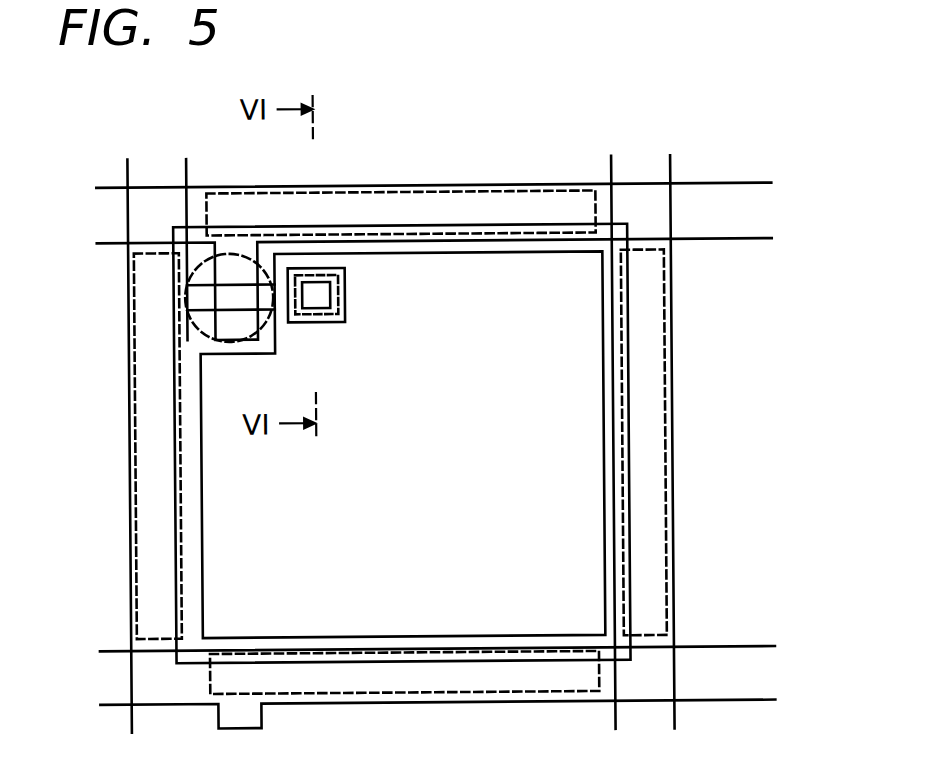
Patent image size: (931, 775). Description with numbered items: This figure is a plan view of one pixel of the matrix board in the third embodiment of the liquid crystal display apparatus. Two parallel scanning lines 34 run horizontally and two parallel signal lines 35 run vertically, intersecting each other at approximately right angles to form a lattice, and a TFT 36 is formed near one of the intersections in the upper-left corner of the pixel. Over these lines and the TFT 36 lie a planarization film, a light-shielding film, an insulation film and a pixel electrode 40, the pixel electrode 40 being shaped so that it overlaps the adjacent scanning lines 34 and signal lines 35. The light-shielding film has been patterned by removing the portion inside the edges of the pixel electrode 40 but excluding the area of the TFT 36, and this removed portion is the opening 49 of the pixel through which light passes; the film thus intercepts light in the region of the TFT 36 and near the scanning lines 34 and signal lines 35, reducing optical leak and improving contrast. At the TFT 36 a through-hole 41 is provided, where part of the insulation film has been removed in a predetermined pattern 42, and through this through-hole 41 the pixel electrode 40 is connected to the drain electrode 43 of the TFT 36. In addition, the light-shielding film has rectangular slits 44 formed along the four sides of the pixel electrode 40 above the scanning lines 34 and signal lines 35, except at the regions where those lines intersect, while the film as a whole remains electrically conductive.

The scanning line 34 is at (747, 184).
The signal line 35 is at (638, 162).
The TFT 36 is at (195, 338).
The pixel electrode 40 is at (628, 525).
The through-hole 41 is at (310, 316).
The predetermined pattern 42 is at (323, 316).
The drain electrode 43 is at (303, 267).
The rectangular slit 44 is at (413, 192).
The opening 49 is at (604, 402).